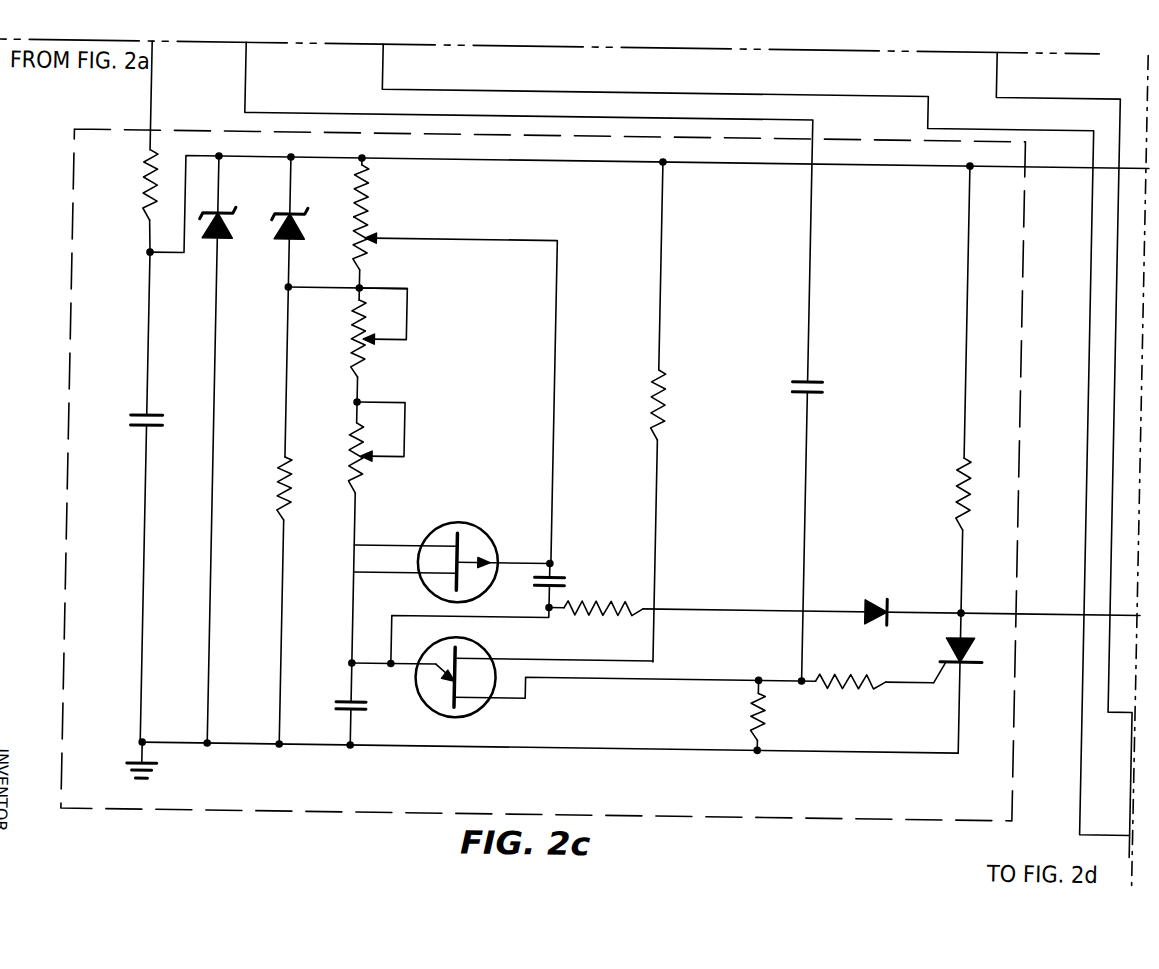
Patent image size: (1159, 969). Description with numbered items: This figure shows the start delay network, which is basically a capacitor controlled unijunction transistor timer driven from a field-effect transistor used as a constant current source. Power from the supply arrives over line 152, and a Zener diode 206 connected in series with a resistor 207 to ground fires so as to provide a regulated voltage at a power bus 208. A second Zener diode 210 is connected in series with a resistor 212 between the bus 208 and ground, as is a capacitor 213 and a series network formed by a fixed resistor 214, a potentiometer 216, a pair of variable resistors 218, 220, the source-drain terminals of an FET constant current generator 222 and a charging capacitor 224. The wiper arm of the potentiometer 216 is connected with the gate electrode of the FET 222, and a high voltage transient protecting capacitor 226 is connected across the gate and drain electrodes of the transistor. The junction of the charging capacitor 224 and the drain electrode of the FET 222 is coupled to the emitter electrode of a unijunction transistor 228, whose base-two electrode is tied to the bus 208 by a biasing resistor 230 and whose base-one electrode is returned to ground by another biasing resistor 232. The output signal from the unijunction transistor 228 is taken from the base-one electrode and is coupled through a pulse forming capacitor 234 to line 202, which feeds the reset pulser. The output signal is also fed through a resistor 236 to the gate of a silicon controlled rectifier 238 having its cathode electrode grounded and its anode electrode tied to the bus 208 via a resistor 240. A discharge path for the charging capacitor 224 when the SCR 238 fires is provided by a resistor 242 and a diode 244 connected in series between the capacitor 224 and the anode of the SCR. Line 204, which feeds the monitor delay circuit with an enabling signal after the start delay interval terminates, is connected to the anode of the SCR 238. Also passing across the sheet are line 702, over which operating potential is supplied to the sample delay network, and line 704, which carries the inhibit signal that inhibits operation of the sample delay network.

The line 152 is at (156, 77).
The line 202 is at (250, 77).
The line 204 is at (1065, 604).
The Zener diode 206 is at (215, 234).
The resistor 207 is at (148, 181).
The power bus 208 is at (246, 155).
The second Zener diode 210 is at (283, 233).
The resistor 212 is at (288, 487).
The capacitor 213 is at (158, 414).
The fixed resistor 214 is at (376, 186).
The potentiometer 216 is at (375, 254).
The variable resistor 218 is at (377, 356).
The variable resistor 220 is at (378, 474).
The FET constant current generator 222 is at (481, 514).
The charging capacitor 224 is at (364, 695).
The high voltage transient protecting capacitor 226 is at (574, 565).
The unijunction transistor 228 is at (434, 699).
The biasing resistor 230 is at (660, 399).
The biasing resistor 232 is at (764, 705).
The pulse forming capacitor 234 is at (836, 369).
The resistor 236 is at (864, 677).
The silicon controlled rectifier 238 is at (958, 642).
The resistor 240 is at (968, 482).
The resistor 242 is at (631, 607).
The diode 244 is at (889, 588).
The line 702 is at (1001, 72).
The line 704 is at (387, 72).